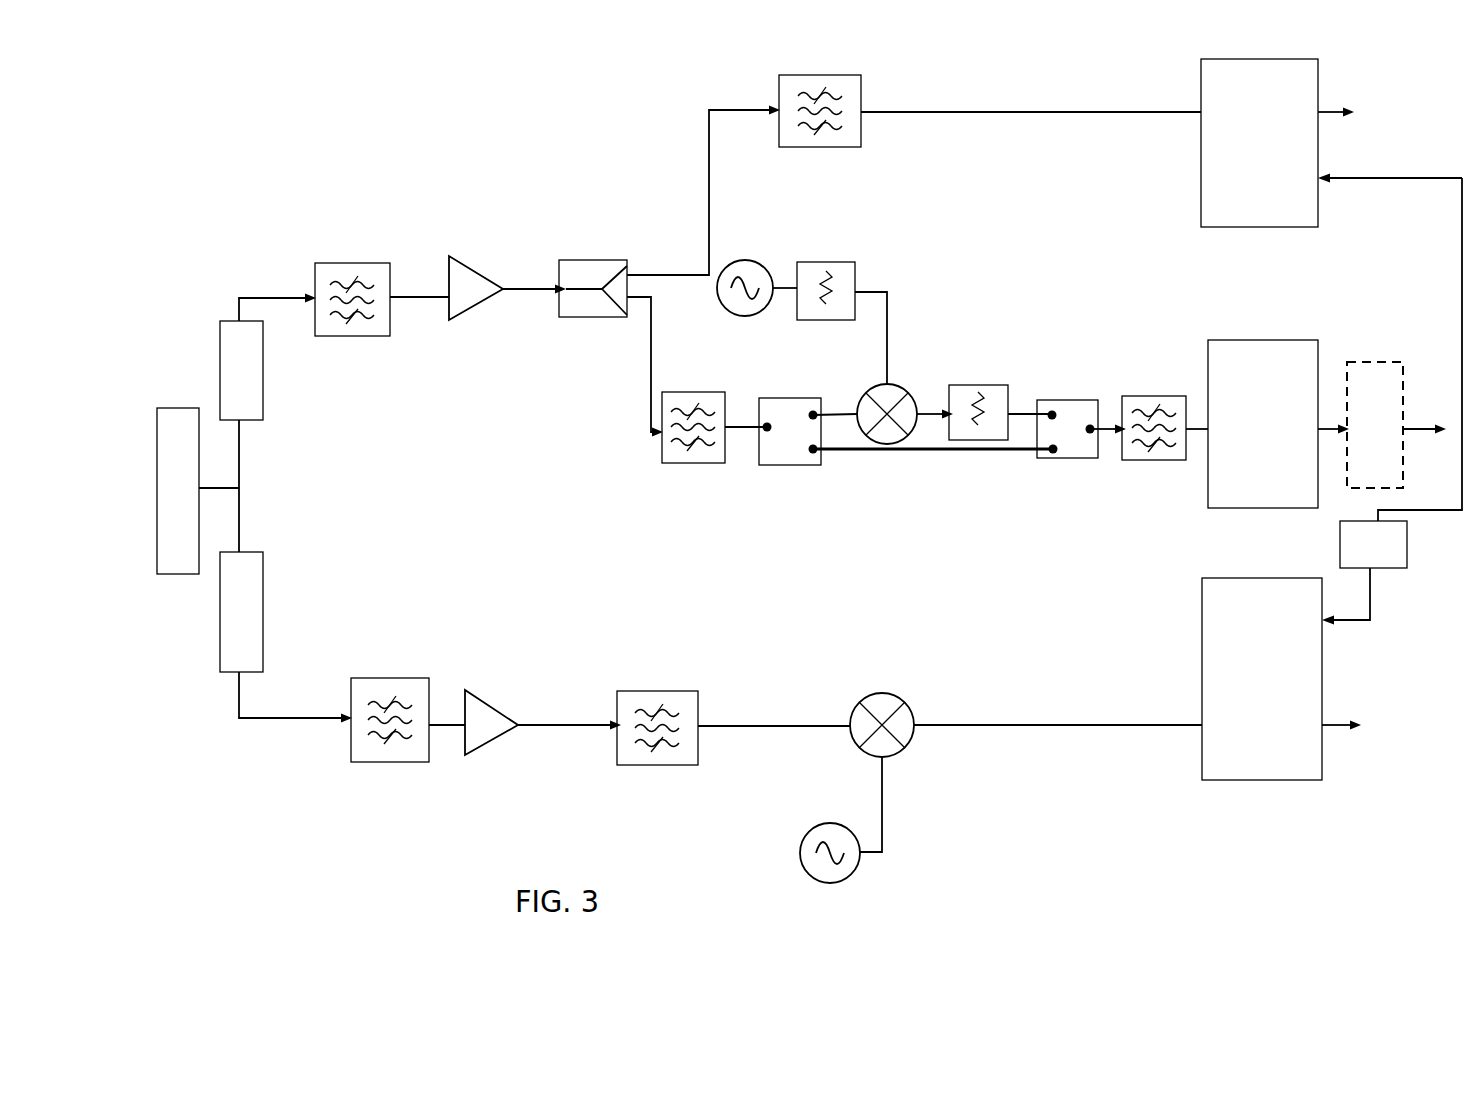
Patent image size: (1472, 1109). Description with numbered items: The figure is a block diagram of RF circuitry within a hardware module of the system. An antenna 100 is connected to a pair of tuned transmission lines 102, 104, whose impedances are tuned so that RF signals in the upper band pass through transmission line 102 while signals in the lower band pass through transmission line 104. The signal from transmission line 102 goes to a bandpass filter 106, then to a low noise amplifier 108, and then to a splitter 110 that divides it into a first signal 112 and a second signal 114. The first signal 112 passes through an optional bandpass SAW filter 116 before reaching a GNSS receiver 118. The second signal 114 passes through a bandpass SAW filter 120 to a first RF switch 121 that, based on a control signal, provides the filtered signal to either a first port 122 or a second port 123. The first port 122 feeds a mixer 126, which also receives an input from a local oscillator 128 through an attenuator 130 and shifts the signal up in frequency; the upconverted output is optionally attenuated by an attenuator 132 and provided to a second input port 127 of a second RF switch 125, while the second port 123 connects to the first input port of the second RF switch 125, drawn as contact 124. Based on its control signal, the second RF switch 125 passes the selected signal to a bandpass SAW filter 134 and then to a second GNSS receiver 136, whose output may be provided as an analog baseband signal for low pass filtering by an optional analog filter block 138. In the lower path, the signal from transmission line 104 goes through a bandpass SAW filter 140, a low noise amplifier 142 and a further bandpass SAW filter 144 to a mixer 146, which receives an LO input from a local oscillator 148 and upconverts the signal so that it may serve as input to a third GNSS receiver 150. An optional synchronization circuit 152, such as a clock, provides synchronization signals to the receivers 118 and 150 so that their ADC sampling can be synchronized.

The antenna 100 is at (178, 427).
The transmission line 102 is at (244, 373).
The transmission line 104 is at (246, 636).
The bandpass filter 106 is at (373, 262).
The low noise amplifier 108 is at (468, 282).
The splitter 110 is at (588, 270).
The first signal 112 is at (665, 275).
The second signal 114 is at (647, 345).
The bandpass SAW filter 116 is at (845, 85).
The GNSS receiver 118 is at (1225, 97).
The bandpass SAW filter 120 is at (682, 455).
The first RF switch 121 is at (819, 455).
The first port 122 is at (812, 413).
The second port 123 is at (832, 455).
The switch contact 124 is at (1035, 460).
The second RF switch 125 is at (1075, 450).
The mixer 126 is at (857, 398).
The second input port 127 is at (1030, 431).
The local oscillator 128 is at (762, 263).
The attenuator 130 is at (855, 263).
The attenuator 132 is at (997, 382).
The bandpass SAW filter 134 is at (1147, 398).
The second GNSS receiver 136 is at (1233, 482).
The analog filter block 138 is at (1375, 377).
The bandpass SAW filter 140 is at (377, 753).
The low noise amplifier 142 is at (493, 733).
The bandpass SAW filter 144 is at (678, 757).
The mixer 146 is at (885, 700).
The local oscillator 148 is at (820, 873).
The third GNSS receiver 150 is at (1235, 725).
The synchronization circuit 152 is at (1354, 542).